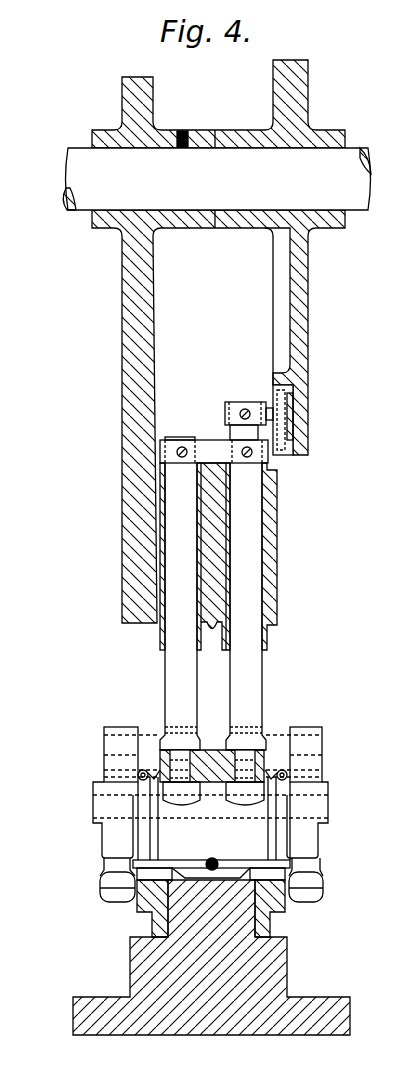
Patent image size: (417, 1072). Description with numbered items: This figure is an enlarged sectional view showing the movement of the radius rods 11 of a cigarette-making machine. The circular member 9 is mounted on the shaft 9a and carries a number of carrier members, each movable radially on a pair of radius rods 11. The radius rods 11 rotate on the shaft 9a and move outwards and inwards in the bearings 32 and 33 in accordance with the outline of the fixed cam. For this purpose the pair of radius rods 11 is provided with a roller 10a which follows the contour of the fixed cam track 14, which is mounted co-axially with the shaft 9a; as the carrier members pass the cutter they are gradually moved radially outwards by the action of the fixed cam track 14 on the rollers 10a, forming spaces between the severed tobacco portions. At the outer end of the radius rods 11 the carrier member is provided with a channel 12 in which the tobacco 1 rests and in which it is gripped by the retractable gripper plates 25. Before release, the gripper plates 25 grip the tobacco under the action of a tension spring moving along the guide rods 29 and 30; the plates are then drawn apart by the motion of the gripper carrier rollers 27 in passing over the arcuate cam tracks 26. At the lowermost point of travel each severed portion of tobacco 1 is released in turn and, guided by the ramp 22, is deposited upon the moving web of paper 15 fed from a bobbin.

The rod of tobacco 1 is at (210, 884).
The circular member 9 is at (122, 383).
The shaft 9a is at (217, 179).
The roller 10a is at (285, 392).
The radius rods 11 is at (183, 676).
The channel 12 is at (212, 880).
The fixed cam track 14 is at (278, 438).
The web of paper 15 is at (193, 876).
The ramp 22 is at (289, 957).
The gripper plates 25 is at (267, 868).
The arcuate cam tracks 26 is at (140, 908).
The gripper carrier rollers 27 is at (108, 885).
The guide rod 29 is at (281, 745).
The guide rod 30 is at (272, 800).
The bearing 32 is at (197, 520).
The bearing 33 is at (263, 558).